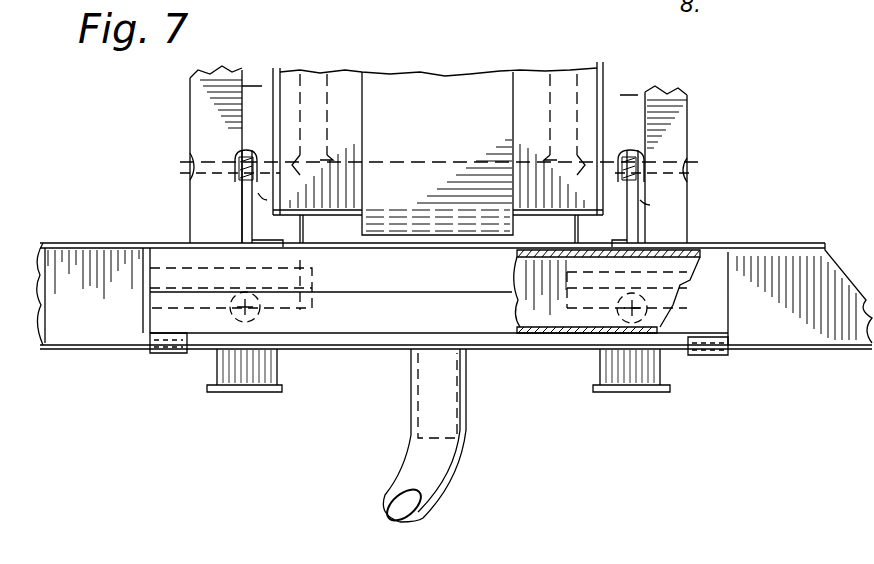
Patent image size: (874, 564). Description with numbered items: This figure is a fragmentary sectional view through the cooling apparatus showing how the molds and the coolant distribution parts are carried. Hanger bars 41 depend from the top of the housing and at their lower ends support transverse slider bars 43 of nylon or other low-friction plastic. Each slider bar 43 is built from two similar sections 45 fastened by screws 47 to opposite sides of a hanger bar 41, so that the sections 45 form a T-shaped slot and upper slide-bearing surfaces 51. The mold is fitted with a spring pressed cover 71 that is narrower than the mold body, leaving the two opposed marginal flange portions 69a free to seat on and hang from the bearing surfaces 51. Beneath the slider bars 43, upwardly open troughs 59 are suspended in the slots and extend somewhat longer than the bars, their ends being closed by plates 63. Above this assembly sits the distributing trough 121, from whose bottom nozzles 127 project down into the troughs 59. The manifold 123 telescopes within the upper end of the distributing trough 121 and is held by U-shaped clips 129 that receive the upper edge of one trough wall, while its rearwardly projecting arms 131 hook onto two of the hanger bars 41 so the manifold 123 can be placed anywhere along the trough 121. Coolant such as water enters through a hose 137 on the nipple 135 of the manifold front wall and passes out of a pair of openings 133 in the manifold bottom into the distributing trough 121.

The hanger bars 41 is at (235, 150).
The slider bars 43 is at (702, 128).
The slider bar sections 45 is at (190, 105).
The screws 47 is at (187, 165).
The slide-bearing surfaces 51 is at (262, 87).
The troughs 59 is at (217, 365).
The plates 63 is at (253, 392).
The marginal flange portions 69a is at (370, 61).
The spring pressed cover 71 is at (468, 93).
The distributing trough 121 is at (63, 347).
The manifold 123 is at (147, 260).
The nozzles 127 is at (257, 313).
The U-shaped ears or clips 129 is at (160, 356).
The arms 131 is at (267, 200).
The openings 133 is at (150, 284).
The nipple 135 is at (440, 353).
The hose 137 is at (457, 477).